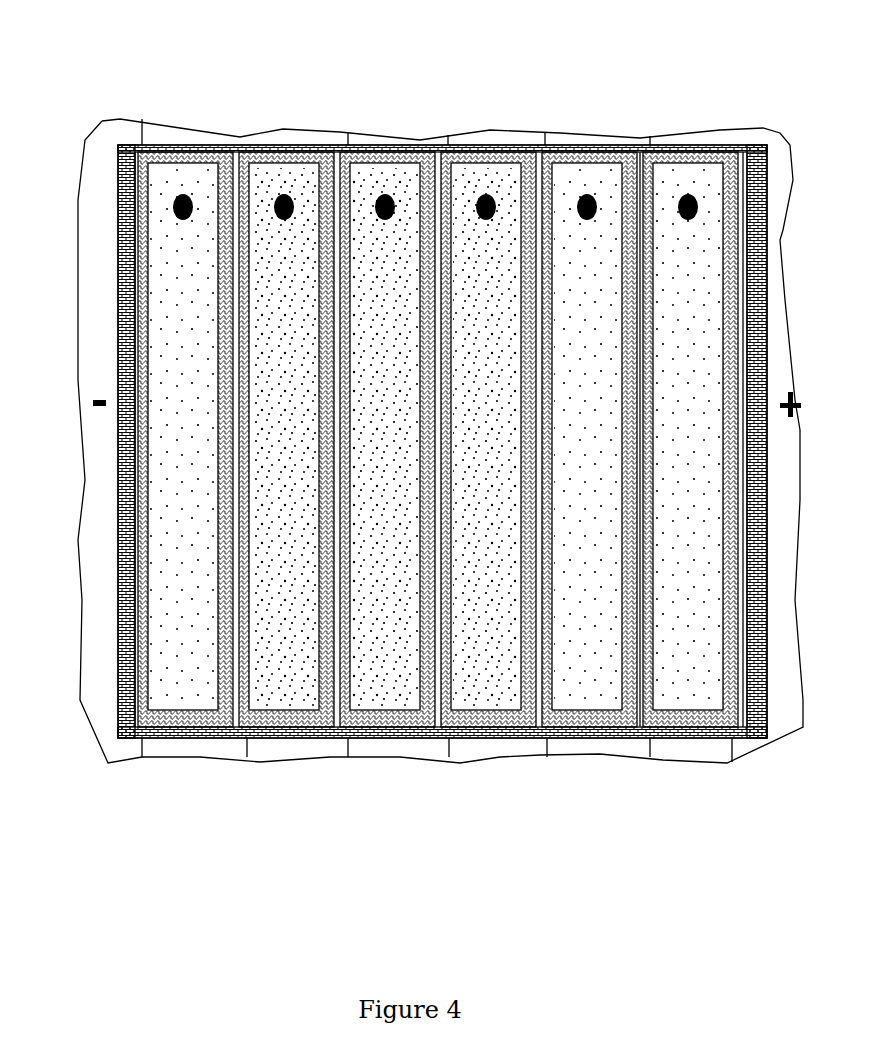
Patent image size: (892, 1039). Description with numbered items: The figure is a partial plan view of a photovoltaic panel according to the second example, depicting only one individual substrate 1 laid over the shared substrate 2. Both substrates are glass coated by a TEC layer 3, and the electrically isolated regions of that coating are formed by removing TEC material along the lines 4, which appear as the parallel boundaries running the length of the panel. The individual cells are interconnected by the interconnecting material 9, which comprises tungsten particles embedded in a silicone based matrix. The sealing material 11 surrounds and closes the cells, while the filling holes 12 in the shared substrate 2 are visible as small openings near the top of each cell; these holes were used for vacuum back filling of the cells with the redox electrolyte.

The individual substrate 1 is at (732, 738).
The shared substrate 2 is at (92, 566).
The TEC layer 3 is at (150, 748).
The lines 4 is at (140, 143).
The interconnecting material 9 is at (642, 722).
The sealing material 11 is at (222, 735).
The filling holes 12 is at (186, 196).